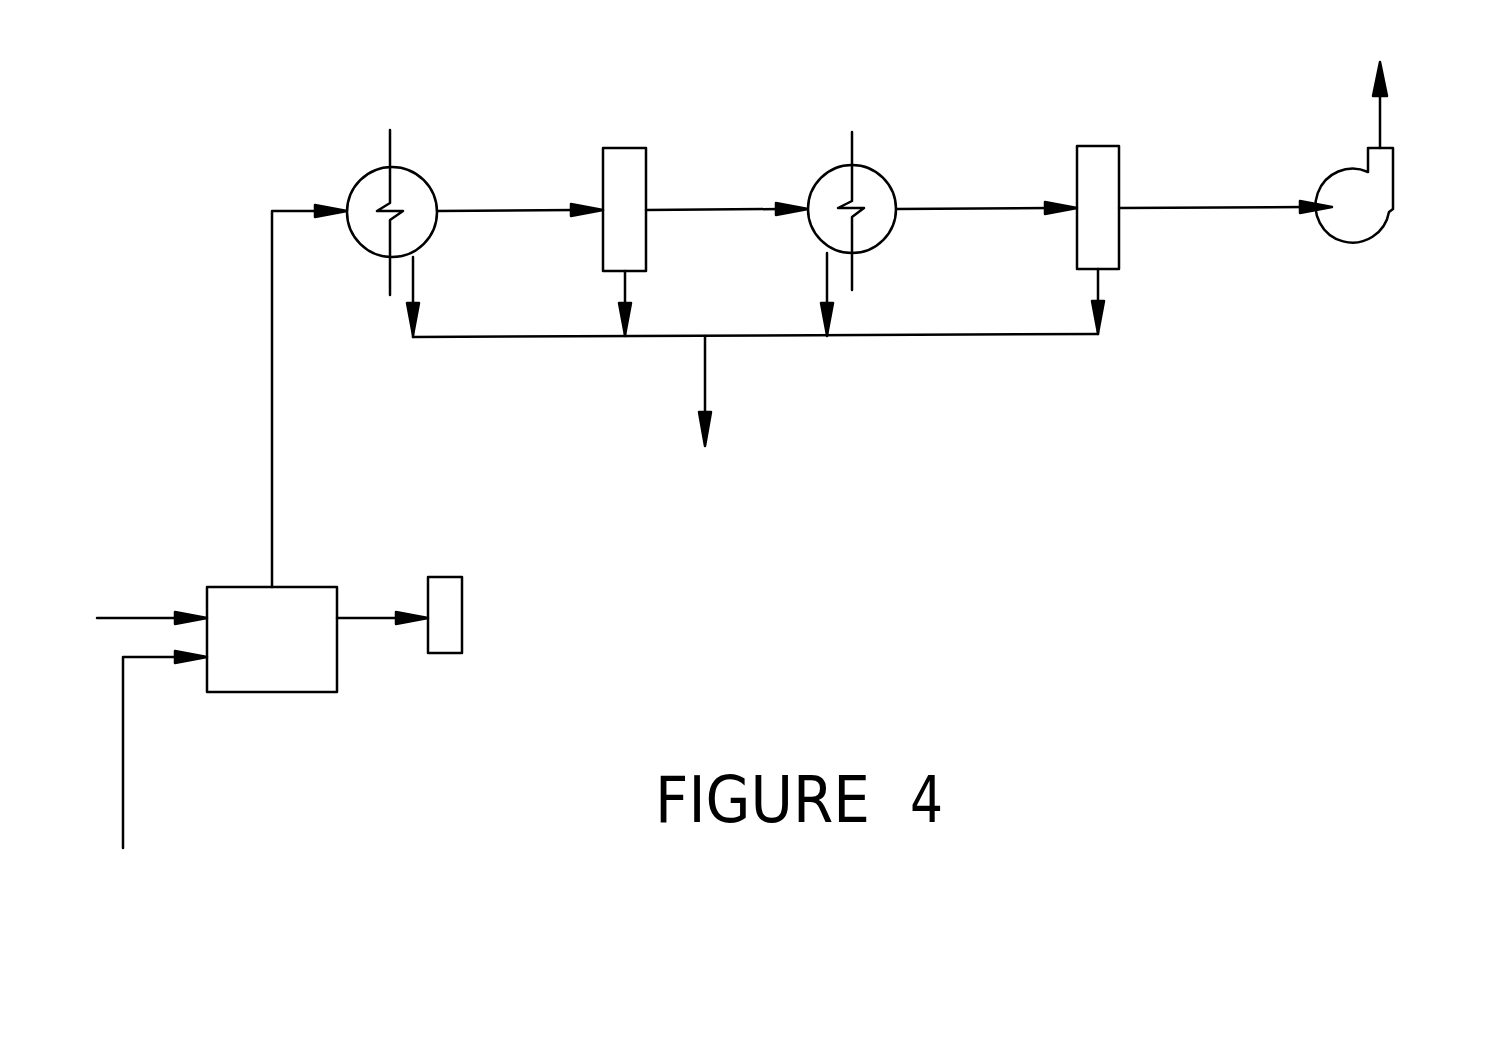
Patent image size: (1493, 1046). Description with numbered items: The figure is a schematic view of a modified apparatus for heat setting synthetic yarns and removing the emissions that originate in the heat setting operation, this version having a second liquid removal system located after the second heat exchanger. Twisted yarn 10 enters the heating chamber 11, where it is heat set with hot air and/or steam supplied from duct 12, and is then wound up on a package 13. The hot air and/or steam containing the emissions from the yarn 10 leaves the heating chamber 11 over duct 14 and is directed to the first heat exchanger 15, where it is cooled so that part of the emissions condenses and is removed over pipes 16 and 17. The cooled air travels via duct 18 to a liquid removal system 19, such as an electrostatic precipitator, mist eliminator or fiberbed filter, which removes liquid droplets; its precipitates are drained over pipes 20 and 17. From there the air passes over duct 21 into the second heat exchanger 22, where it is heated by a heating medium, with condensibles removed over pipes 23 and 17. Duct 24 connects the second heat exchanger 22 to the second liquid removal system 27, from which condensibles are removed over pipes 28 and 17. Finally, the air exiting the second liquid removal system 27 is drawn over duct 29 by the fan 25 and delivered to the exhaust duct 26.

The twisted yarn 10 is at (115, 617).
The heating chamber 11 is at (287, 622).
The duct 12 is at (125, 768).
The package 13 is at (448, 625).
The duct 14 is at (275, 378).
The first heat exchanger 15 is at (408, 178).
The pipe 16 is at (415, 280).
The pipe 17 is at (707, 387).
The duct 18 is at (490, 207).
The liquid removal system 19 is at (622, 162).
The pipe 20 is at (625, 288).
The duct 21 is at (705, 208).
The second heat exchanger 22 is at (865, 182).
The pipe 23 is at (825, 268).
The duct 24 is at (975, 207).
The fan 25 is at (1377, 203).
The exhaust duct 26 is at (1382, 125).
The second liquid removal system 27 is at (1095, 160).
The pipe 28 is at (1100, 287).
The duct 29 is at (1183, 203).